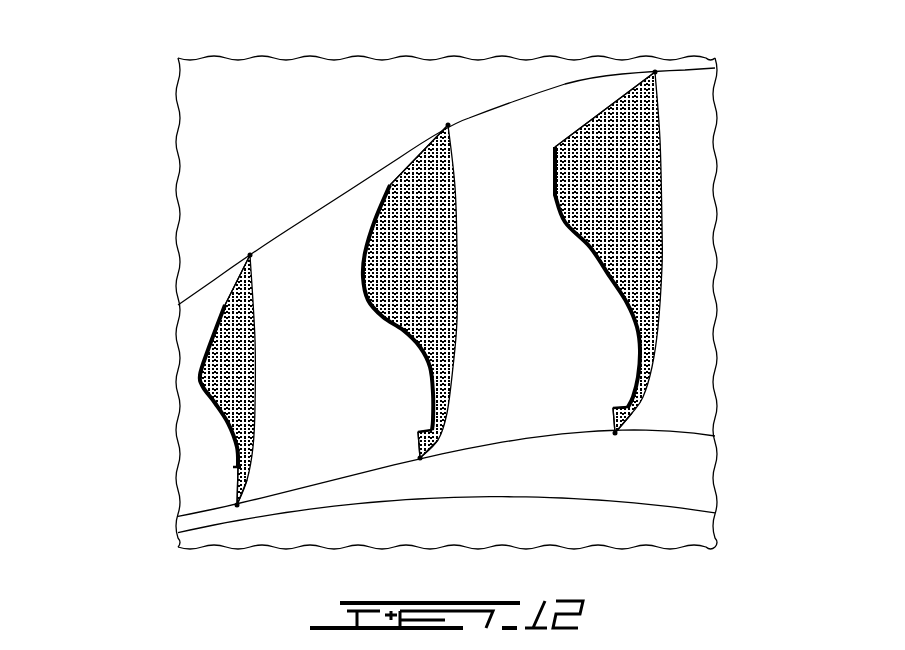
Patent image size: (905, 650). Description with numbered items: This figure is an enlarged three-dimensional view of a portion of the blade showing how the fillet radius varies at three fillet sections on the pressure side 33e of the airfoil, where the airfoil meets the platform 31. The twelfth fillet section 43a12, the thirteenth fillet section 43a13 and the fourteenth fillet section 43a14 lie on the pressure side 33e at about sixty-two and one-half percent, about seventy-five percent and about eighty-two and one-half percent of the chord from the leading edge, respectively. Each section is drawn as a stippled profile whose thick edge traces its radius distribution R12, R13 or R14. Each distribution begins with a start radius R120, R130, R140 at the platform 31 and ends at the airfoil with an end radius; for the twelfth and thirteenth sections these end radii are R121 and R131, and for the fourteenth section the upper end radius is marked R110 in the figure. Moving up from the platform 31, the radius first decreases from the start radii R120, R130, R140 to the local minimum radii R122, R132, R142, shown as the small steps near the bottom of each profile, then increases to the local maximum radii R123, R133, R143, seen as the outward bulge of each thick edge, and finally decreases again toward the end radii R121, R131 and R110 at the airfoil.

The pressure side 33e is at (225, 88).
The platform 31 is at (650, 530).
The fourteenth fillet section 43a14 is at (191, 336).
The radius distribution R14 is at (191, 336).
The leading edge of blade R14 tip portion R110 is at (240, 275).
The local maximum radius R143 is at (201, 377).
The local minimum radius R142 is at (247, 466).
The start radius R140 is at (237, 485).
The thirteenth fillet section 43a13 is at (364, 305).
The radius distribution R13 is at (364, 305).
The end radius R131 is at (408, 165).
The local maximum radius R133 is at (363, 278).
The local minimum radius R132 is at (432, 415).
The start radius R130 is at (418, 446).
The twelfth fillet section 43a12 is at (575, 244).
The radius distribution R12 is at (575, 244).
The end radius R121 is at (580, 128).
The local maximum radius R123 is at (557, 190).
The local minimum radius R122 is at (628, 403).
The start radius R120 is at (615, 433).